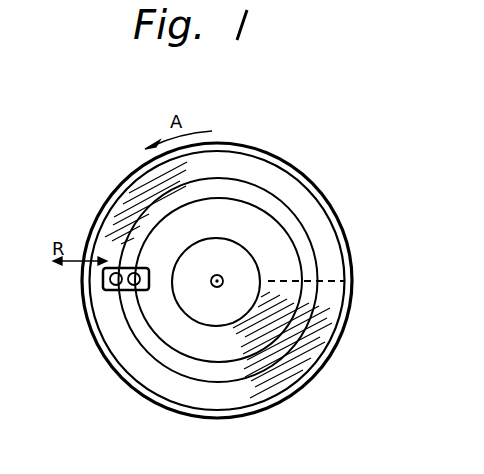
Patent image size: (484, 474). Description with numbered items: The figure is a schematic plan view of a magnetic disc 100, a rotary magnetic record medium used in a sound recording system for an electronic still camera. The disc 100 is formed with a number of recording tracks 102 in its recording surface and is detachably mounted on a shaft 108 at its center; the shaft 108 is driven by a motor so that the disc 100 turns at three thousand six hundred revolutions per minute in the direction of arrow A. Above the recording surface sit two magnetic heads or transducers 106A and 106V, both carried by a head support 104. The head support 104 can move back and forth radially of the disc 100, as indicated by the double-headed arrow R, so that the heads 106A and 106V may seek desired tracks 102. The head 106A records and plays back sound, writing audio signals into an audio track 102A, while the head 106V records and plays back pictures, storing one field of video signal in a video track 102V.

The magnetic disc 100 is at (328, 363).
The recording tracks 102 is at (337, 223).
The audio track 102A is at (243, 182).
The video track 102V is at (171, 223).
The head support 104 is at (103, 280).
The audio head 106A is at (125, 268).
The video head 106V is at (149, 290).
The shaft 108 is at (217, 275).